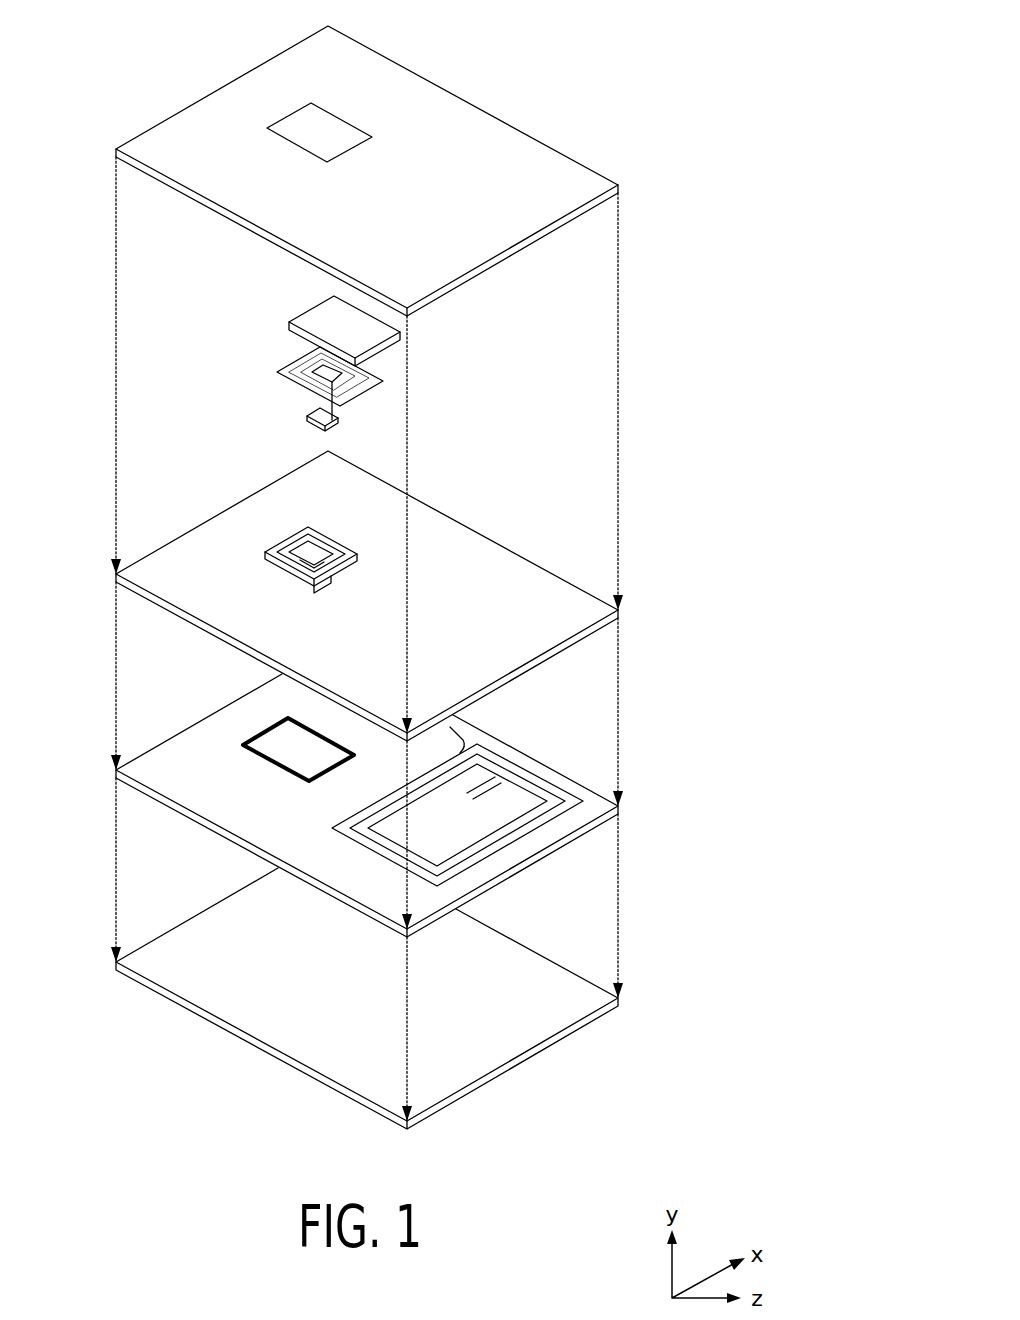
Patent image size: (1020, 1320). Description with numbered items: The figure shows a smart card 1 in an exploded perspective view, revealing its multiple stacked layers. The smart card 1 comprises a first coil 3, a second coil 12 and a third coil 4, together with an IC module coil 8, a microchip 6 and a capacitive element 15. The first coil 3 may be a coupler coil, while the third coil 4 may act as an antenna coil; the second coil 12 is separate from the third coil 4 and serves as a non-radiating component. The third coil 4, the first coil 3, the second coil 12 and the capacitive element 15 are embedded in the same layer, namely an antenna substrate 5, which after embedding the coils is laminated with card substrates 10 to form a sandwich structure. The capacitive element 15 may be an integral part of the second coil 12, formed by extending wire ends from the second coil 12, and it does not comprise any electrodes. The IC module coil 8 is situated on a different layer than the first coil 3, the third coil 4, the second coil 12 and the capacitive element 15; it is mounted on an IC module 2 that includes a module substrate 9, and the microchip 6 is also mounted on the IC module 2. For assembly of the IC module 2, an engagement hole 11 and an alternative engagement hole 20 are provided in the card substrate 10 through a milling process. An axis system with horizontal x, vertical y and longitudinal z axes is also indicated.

The smart card 1 is at (712, 64).
The IC module 2 is at (268, 296).
The first coil 3 is at (263, 728).
The third coil 4 is at (172, 737).
The antenna substrate 5 is at (217, 738).
The microchip 6 is at (338, 421).
The IC module coil 8 is at (290, 368).
The module substrate 9 is at (318, 312).
The card substrate 10 is at (538, 152).
The engagement hole 11 is at (290, 550).
The second coil 12 is at (553, 800).
The capacitive element 15 is at (480, 783).
The alternative engagement hole 20 is at (340, 126).